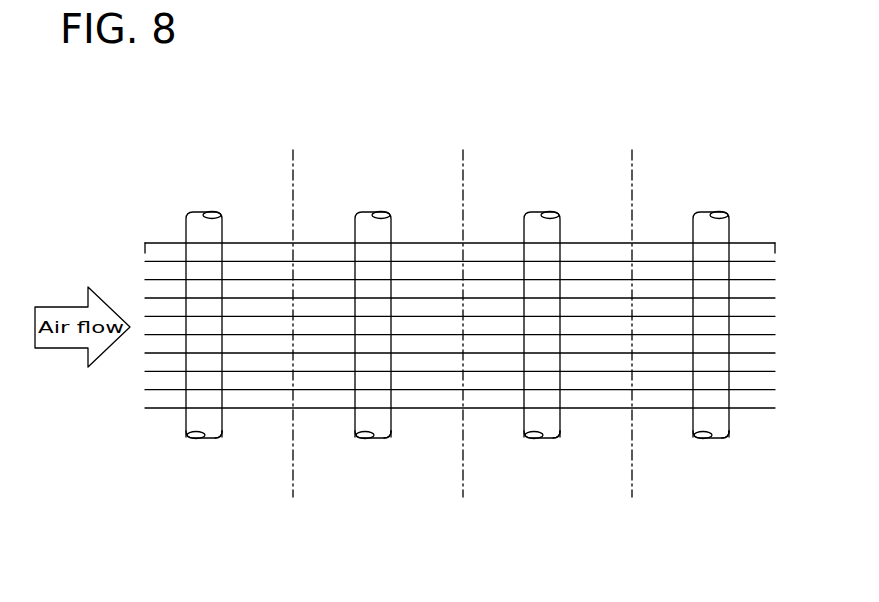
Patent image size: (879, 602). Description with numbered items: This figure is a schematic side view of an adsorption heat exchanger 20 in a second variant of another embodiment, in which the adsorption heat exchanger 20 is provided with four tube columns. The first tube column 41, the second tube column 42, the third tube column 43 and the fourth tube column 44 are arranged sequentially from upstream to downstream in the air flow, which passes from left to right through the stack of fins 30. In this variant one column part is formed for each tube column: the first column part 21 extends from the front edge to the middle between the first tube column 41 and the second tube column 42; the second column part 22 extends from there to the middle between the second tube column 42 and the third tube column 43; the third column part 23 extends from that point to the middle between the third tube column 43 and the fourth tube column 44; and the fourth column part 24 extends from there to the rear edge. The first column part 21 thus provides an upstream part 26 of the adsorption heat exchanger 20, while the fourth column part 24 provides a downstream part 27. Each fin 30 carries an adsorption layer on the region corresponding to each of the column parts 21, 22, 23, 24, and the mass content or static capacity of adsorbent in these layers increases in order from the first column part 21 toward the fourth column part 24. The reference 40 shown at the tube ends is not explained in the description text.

The adsorption heat exchanger 20 is at (165, 158).
The first column part 21 is at (237, 219).
The second column part 22 is at (406, 219).
The third column part 23 is at (574, 219).
The fourth column part 24 is at (746, 219).
The upstream part 26 is at (175, 230).
The downstream part 27 is at (758, 226).
The fin 30 is at (153, 355).
The tube end portion 40 is at (186, 421).
The first tube column 41 is at (225, 423).
The second tube column 42 is at (394, 423).
The third tube column 43 is at (563, 423).
The fourth tube column 44 is at (733, 423).